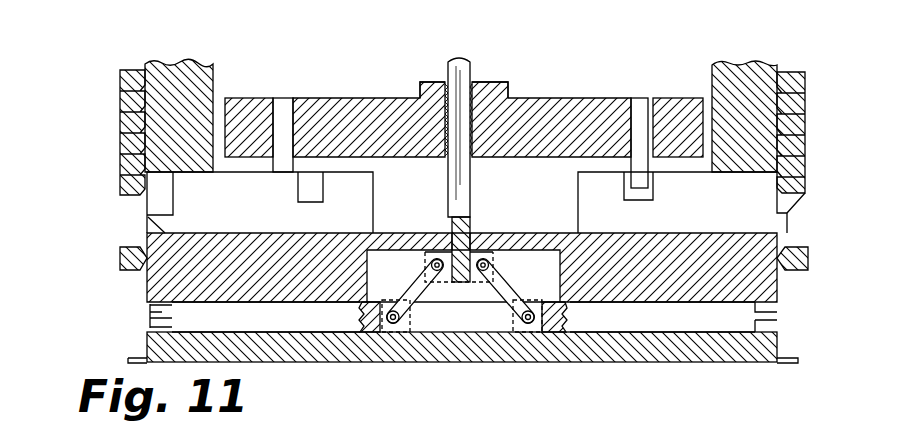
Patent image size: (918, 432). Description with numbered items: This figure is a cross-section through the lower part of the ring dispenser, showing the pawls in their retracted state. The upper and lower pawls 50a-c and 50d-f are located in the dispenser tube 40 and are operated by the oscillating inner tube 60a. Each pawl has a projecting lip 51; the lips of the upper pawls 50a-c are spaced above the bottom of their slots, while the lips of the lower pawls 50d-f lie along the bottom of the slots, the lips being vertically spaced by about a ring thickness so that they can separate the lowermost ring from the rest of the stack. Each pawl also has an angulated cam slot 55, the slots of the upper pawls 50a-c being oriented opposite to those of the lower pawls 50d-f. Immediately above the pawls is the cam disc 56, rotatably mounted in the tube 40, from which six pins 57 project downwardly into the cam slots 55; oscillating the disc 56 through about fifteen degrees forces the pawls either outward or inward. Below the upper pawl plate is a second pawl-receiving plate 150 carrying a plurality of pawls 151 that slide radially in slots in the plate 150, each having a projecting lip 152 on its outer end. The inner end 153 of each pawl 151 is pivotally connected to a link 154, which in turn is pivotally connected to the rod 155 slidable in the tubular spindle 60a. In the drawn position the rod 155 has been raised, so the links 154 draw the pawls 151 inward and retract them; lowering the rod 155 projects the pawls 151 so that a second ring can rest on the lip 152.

The dispenser tube 40 is at (762, 40).
The cam disc 56 is at (367, 115).
The pins 57 is at (283, 104).
The oscillating inner tube 60a is at (509, 84).
The rod 155 is at (472, 188).
The lower pawls 50d-f is at (260, 202).
The cam slot 55 is at (318, 196).
The upper pawls 50a-c is at (682, 202).
The projecting lip 51 is at (160, 219).
The second pawl-receiving plate 150 is at (490, 358).
The pawls 151 is at (463, 317).
The projecting lip 152 is at (150, 323).
The inner end 153 is at (385, 330).
The link 154 is at (503, 294).